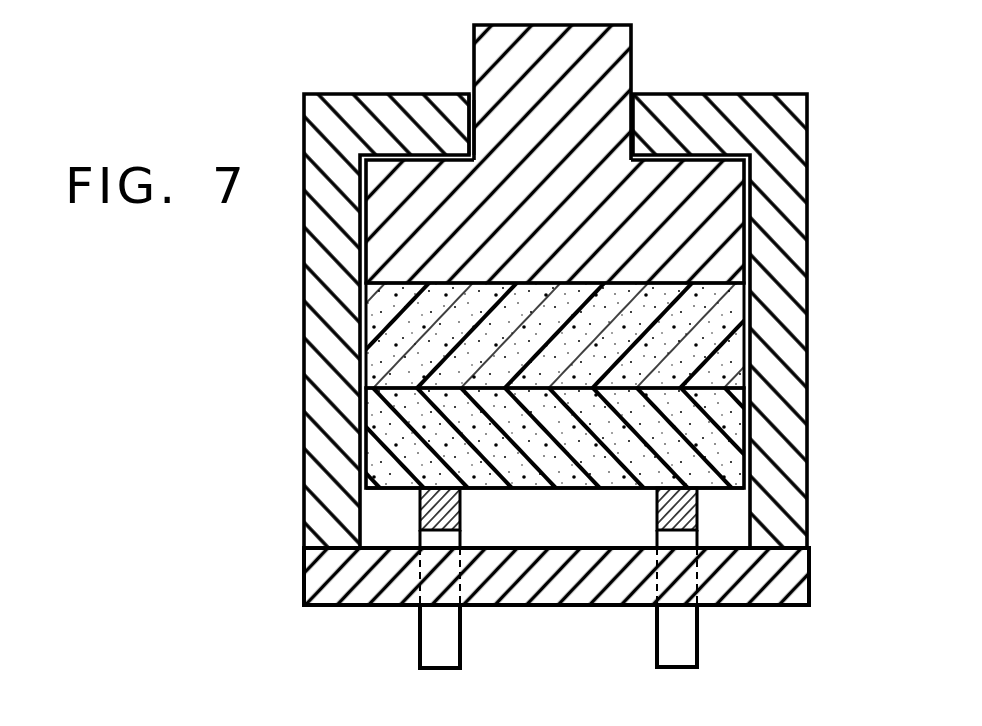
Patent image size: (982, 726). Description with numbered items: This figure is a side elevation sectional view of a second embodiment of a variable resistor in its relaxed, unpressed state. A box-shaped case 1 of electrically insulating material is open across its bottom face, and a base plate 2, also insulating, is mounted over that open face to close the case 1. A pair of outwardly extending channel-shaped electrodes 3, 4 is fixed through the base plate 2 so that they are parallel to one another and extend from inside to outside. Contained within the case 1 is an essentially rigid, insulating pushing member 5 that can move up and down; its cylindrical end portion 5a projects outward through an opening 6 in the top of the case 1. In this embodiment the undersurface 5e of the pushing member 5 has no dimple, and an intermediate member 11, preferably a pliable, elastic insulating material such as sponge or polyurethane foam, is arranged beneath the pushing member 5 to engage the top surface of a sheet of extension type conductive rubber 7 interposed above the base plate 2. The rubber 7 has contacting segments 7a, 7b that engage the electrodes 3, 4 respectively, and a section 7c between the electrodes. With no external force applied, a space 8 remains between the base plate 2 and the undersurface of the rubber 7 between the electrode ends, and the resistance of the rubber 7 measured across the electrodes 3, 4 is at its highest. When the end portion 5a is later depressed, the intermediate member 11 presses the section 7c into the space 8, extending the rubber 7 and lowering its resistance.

The case 1 is at (323, 270).
The base plate 2 is at (313, 577).
The electrode 3 is at (433, 655).
The electrode 4 is at (681, 660).
The pushing member 5 is at (720, 233).
The cylindrical end portion 5a is at (610, 48).
The undersurface 5e is at (675, 287).
The opening 6 is at (470, 120).
The extension type conductive rubber 7 is at (727, 445).
The contacting segment 7a is at (443, 499).
The contacting segment 7b is at (670, 489).
The section of the rubber between the electrodes 7c is at (584, 490).
The space 8 is at (617, 520).
The intermediate member 11 is at (727, 362).